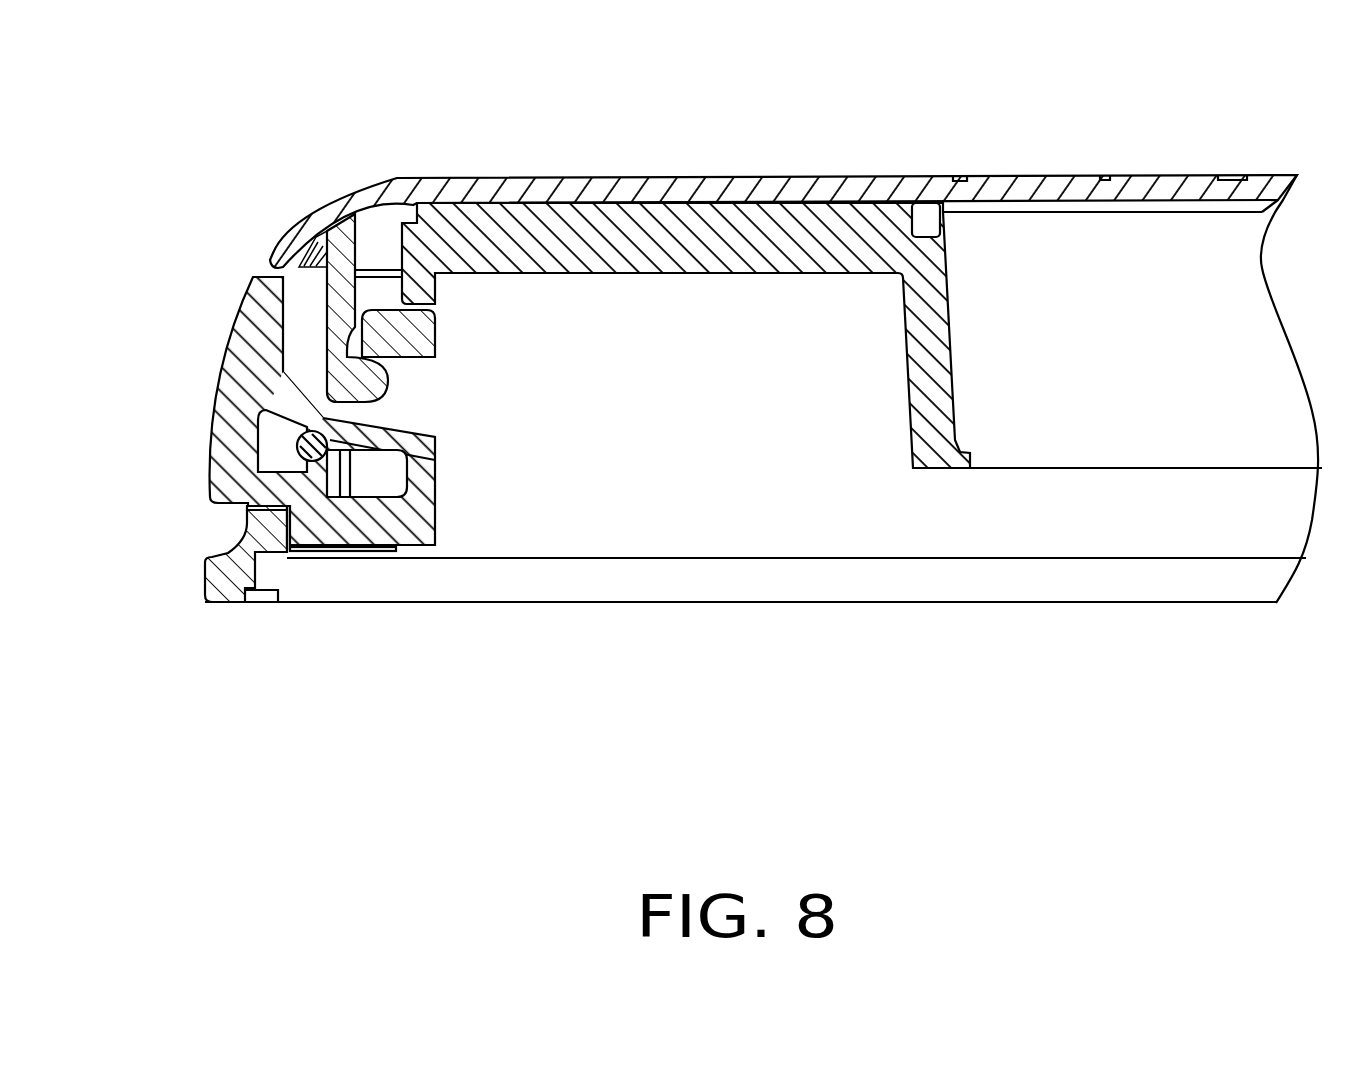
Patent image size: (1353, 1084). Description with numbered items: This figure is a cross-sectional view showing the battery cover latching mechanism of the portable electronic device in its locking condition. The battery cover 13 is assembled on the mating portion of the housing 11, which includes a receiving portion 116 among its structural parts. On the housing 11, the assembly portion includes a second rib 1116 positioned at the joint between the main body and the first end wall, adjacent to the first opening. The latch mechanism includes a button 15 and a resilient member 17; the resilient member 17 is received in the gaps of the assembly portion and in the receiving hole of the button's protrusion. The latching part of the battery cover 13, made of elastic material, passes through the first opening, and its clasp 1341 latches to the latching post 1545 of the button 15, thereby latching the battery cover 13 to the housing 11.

The housing 11 is at (520, 578).
The battery cover 13 is at (640, 188).
The button 15 is at (245, 403).
The resilient member 17 is at (297, 442).
The receiving portion 116 is at (803, 227).
The second rib 1116 is at (240, 523).
The clasp 1341 is at (337, 303).
The latching post 1545 is at (393, 337).